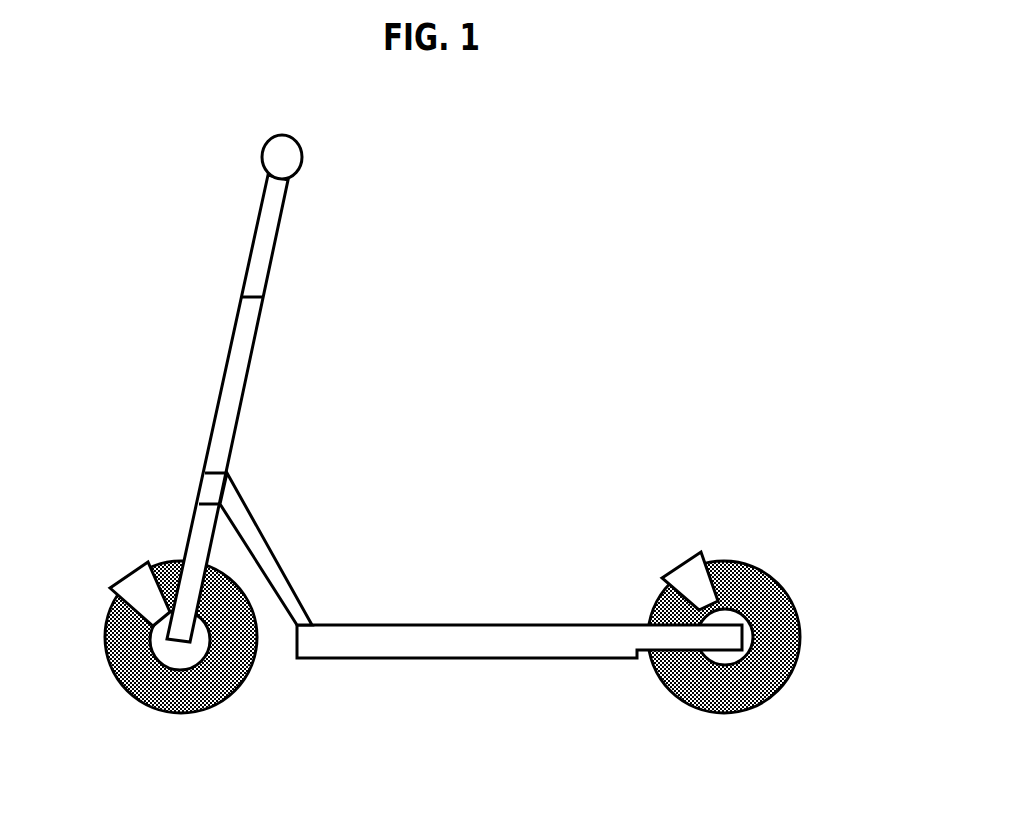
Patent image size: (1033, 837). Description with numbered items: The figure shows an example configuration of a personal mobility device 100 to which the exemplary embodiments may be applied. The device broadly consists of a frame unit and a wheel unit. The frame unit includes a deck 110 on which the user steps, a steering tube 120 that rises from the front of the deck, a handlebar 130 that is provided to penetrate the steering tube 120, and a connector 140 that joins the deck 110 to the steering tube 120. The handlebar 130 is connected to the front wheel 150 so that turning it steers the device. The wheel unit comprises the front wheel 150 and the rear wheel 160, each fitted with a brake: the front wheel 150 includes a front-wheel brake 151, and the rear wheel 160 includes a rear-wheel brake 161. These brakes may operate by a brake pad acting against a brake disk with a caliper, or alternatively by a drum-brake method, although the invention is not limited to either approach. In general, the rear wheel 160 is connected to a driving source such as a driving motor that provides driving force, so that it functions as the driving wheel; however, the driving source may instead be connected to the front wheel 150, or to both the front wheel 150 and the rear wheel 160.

The personal mobility device 100 is at (80, 144).
The deck 110 is at (408, 647).
The steering tube 120 is at (230, 349).
The handlebar 130 is at (300, 147).
The connector 140 is at (270, 540).
The front wheel 150 is at (150, 707).
The front-wheel brake 151 is at (150, 618).
The rear wheel 160 is at (783, 693).
The rear-wheel brake 161 is at (700, 608).